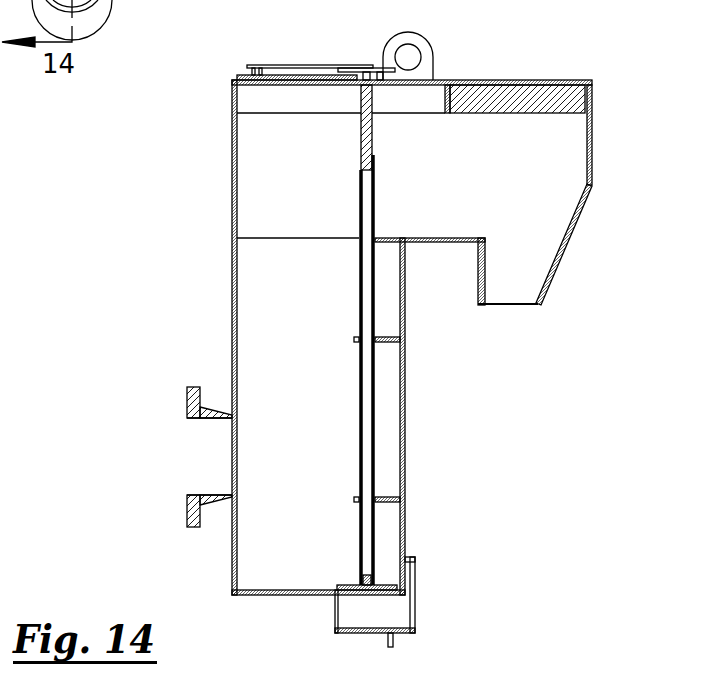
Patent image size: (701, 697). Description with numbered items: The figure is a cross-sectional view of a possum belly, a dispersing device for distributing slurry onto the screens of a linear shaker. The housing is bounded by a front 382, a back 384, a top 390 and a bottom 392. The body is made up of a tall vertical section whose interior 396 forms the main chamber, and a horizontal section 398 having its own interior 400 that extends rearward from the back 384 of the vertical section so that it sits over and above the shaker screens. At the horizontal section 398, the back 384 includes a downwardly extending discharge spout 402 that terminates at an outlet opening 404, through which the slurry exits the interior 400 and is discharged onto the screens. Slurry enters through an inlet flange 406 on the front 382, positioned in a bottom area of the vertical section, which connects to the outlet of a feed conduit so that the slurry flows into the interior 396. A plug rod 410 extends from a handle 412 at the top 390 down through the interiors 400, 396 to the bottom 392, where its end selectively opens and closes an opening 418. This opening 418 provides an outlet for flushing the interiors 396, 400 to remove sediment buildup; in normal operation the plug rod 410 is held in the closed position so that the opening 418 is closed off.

The front 382 is at (232, 305).
The back 384 is at (590, 118).
The top 390 is at (483, 80).
The bottom 392 is at (283, 595).
The interior 396 is at (300, 383).
The horizontal section 398 is at (232, 185).
The interior 400 is at (492, 173).
The discharge spout 402 is at (557, 232).
The outlet opening 404 is at (507, 300).
The inlet flange 406 is at (190, 405).
The plug rod 410 is at (372, 432).
The handle 412 is at (350, 67).
The opening 418 is at (408, 610).